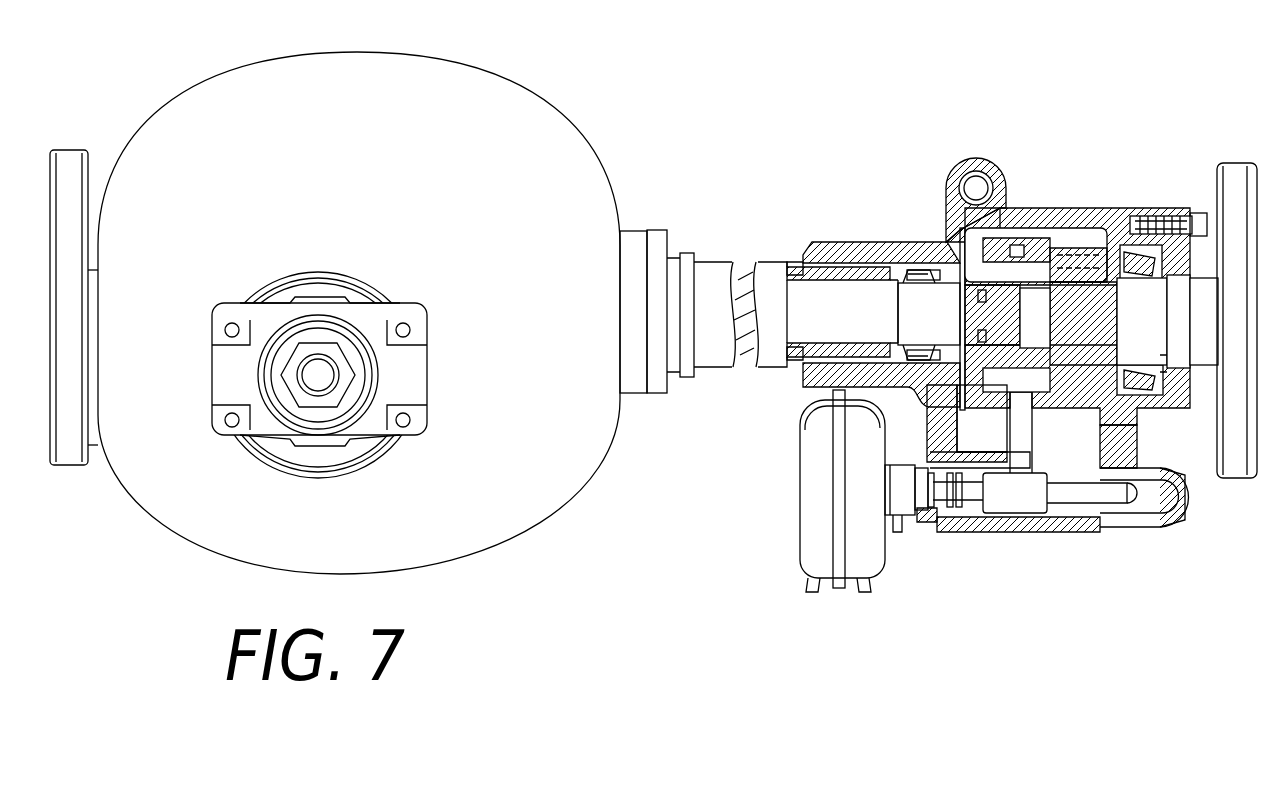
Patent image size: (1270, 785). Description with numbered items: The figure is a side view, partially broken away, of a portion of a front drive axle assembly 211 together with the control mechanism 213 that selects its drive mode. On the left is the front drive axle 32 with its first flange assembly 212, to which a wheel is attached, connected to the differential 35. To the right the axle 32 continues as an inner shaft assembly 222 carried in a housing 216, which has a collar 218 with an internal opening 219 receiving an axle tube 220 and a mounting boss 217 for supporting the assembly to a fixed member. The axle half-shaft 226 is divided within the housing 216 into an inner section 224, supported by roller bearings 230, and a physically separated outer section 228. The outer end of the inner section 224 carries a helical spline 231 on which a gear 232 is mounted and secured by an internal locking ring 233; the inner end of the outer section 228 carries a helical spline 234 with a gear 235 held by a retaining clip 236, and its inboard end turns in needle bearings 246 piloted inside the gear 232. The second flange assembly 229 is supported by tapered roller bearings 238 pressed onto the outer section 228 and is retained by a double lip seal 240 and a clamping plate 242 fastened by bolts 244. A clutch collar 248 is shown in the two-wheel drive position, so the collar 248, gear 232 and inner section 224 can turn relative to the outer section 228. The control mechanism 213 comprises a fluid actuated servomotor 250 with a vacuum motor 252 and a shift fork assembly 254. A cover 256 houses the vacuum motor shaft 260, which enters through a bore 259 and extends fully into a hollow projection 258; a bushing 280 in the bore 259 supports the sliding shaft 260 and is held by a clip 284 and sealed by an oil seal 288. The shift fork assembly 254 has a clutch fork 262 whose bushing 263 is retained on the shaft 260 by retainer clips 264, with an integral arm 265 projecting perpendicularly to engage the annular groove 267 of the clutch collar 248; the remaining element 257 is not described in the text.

The front drive axle assembly 211 is at (770, 46).
The first flange assembly 212 is at (88, 458).
The control mechanism 213 is at (767, 570).
The housing 216 is at (1050, 206).
The mounting boss 217 is at (988, 168).
The collar 218 is at (842, 245).
The internal opening 219 is at (816, 262).
The axle tube 220 is at (792, 258).
The inner shaft assembly 222 is at (692, 248).
The inner section of the axle half-shaft 224 is at (800, 355).
The axle half-shaft 226 is at (795, 322).
The outer section of the axle half-shaft 228 is at (1142, 321).
The second flange assembly 229 is at (1237, 160).
The roller bearings 230 is at (912, 281).
The helical spline 231 is at (963, 352).
The gear 232 is at (958, 244).
The internal locking ring 233 is at (959, 340).
The helical spline 234 is at (1107, 280).
The gear 235 is at (1072, 250).
The retaining clip 236 is at (1045, 302).
The tapered roller bearings 238 is at (1130, 368).
The double lip seal 240 is at (1172, 378).
The clamping plate 242 is at (1190, 216).
The bolts 244 is at (1198, 213).
The needle bearings 246 is at (1052, 366).
The clutch collar 248 is at (997, 240).
The fluid actuated servomotor 250 is at (787, 520).
The vacuum motor 252 is at (798, 477).
The shift fork assembly 254 is at (1055, 465).
The cover 256 is at (1180, 512).
The rail 257 is at (997, 518).
The hollow projection 258 is at (1178, 495).
The bore 259 is at (940, 516).
The vacuum motor shaft 260 is at (940, 507).
The clutch fork 262 is at (1030, 532).
The bushing or collar 263 is at (1023, 490).
The retainer clips 264 is at (968, 500).
The integral arm 265 is at (1020, 430).
The annular groove 267 is at (959, 318).
The bushing 280 is at (938, 512).
The clip 284 is at (945, 468).
The oil seal 288 is at (923, 470).
The front drive axle 32 is at (602, 108).
The differential 35 is at (538, 118).